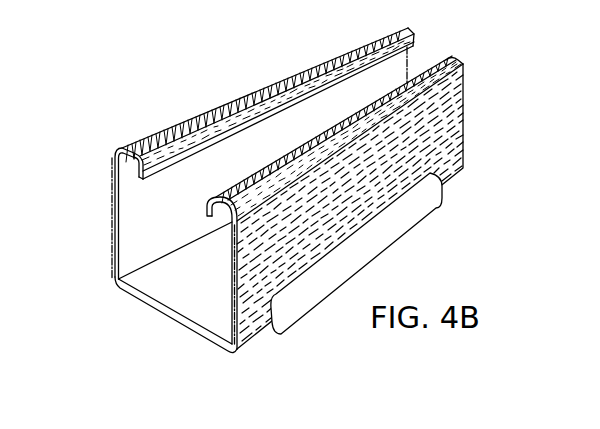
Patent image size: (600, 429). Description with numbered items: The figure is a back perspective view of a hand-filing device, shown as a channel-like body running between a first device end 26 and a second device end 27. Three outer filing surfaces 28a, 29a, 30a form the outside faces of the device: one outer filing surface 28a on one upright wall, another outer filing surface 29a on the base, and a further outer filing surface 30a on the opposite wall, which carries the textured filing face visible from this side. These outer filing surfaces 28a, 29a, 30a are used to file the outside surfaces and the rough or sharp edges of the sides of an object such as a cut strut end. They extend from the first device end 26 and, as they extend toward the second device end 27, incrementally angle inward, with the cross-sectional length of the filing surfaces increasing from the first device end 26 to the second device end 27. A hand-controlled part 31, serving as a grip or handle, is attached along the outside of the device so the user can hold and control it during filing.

The first device end 26 is at (300, 205).
The second device end 27 is at (507, 96).
The outer filing surface 28a is at (120, 197).
The outer filing surface 29a is at (144, 287).
The outer filing surface 30a is at (232, 281).
The hand-controlled part 31 is at (372, 249).